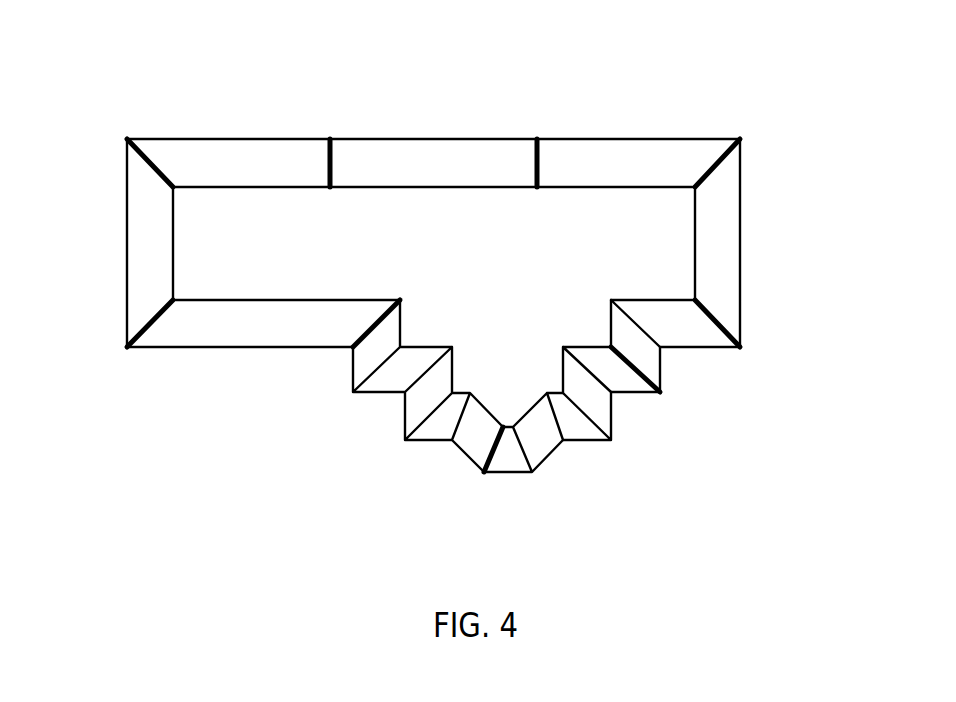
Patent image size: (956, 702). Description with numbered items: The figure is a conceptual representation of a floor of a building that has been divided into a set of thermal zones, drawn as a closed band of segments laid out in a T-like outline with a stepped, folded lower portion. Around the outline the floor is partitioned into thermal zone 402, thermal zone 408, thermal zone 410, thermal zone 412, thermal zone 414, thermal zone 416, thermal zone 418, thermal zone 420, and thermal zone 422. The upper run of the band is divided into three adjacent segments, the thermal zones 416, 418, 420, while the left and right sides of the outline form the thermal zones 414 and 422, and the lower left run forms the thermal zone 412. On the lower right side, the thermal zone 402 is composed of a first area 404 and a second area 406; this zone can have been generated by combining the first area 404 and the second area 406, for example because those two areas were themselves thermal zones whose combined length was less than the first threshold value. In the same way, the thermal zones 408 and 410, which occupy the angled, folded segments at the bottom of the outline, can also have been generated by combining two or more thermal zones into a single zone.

The thermal zone 402 is at (685, 333).
The first area 404 is at (670, 318).
The second area 406 is at (630, 347).
The thermal zone 408 is at (588, 432).
The thermal zone 410 is at (427, 432).
The thermal zone 412 is at (250, 333).
The thermal zone 414 is at (137, 240).
The thermal zone 416 is at (265, 157).
The thermal zone 418 is at (458, 157).
The thermal zone 420 is at (670, 150).
The thermal zone 422 is at (733, 245).